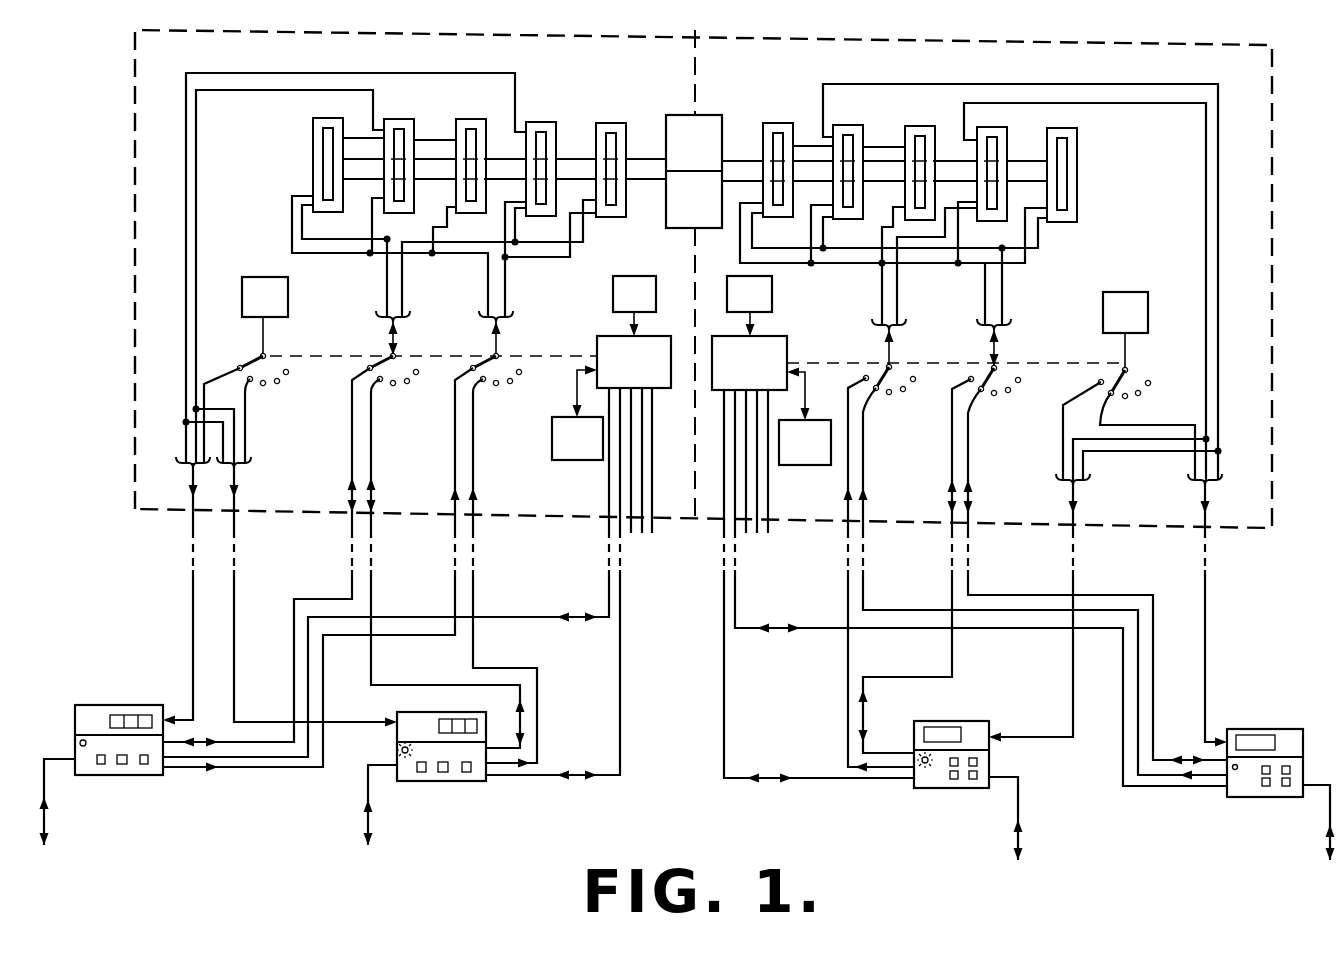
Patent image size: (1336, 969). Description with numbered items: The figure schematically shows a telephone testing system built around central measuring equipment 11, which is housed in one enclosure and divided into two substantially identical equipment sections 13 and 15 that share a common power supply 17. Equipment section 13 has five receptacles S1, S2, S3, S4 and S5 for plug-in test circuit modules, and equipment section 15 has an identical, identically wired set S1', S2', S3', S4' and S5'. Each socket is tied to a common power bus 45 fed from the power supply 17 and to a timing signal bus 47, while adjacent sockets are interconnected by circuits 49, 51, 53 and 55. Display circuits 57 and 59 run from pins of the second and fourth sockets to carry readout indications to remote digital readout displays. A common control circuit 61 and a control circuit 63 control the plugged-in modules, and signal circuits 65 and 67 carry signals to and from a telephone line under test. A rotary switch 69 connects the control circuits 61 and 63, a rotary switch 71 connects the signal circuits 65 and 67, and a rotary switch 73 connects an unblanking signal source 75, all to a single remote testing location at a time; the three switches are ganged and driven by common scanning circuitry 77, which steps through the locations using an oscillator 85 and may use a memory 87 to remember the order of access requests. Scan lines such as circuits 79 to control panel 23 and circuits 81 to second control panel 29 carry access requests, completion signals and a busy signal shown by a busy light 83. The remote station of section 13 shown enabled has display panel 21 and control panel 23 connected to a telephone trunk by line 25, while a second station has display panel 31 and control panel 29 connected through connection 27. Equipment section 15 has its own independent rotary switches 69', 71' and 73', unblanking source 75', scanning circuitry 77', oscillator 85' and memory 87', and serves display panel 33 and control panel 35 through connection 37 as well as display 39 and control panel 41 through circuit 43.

The central measuring equipment 11 is at (1275, 312).
The equipment section 13 is at (140, 490).
The equipment section 15 is at (1235, 520).
The common power supply 17 is at (706, 115).
The display panel 21 is at (75, 708).
The control panel 23 is at (75, 745).
The line 25 is at (48, 788).
The connection 27 is at (368, 786).
The second control panel 29 is at (452, 781).
The display panel 31 is at (400, 712).
The display panel 33 is at (980, 722).
The control panel 35 is at (939, 788).
The connection 37 is at (1018, 796).
The display 39 is at (1278, 729).
The control panel 41 is at (1245, 797).
The circuit 43 is at (1328, 814).
The common power bus 45 is at (637, 159).
The timing signal bus 47 is at (640, 180).
The circuits 49 is at (364, 140).
The circuits 51 is at (429, 142).
The circuits 53 is at (494, 192).
The circuits 55 is at (564, 192).
The display circuits 57 is at (246, 92).
The display circuits 59 is at (276, 73).
The common control circuit 61 is at (488, 294).
The control circuit 63 is at (505, 294).
The signal circuit 65 is at (387, 294).
The common signal circuit 67 is at (402, 294).
The rotary switch 69 is at (494, 440).
The rotary switch 69' is at (890, 444).
The rotary switch 71 is at (392, 440).
The rotary switch 71' is at (998, 444).
The rotary switch 73 is at (240, 448).
The rotary switch 73' is at (1139, 454).
The unblanking signal source 75 is at (258, 301).
The unblanking signal source 75' is at (1138, 313).
The scanning circuitry 77 is at (619, 357).
The scanning circuitry 77' is at (767, 361).
The circuits 79 is at (606, 538).
The circuits 81 is at (622, 538).
The busy light 83 is at (408, 754).
The oscillator 85 is at (616, 306).
The oscillator 85' is at (771, 306).
The memory 87 is at (573, 429).
The memory 87' is at (805, 433).
The receptacle S1 is at (312, 165).
The receptacle S2 is at (399, 153).
The receptacle S3 is at (471, 153).
The receptacle S4 is at (542, 155).
The receptacle S5 is at (611, 155).
The receptacle S1' is at (779, 156).
The receptacle S2' is at (854, 158).
The receptacle S3' is at (924, 159).
The receptacle S4' is at (1010, 164).
The receptacle S5' is at (1085, 168).